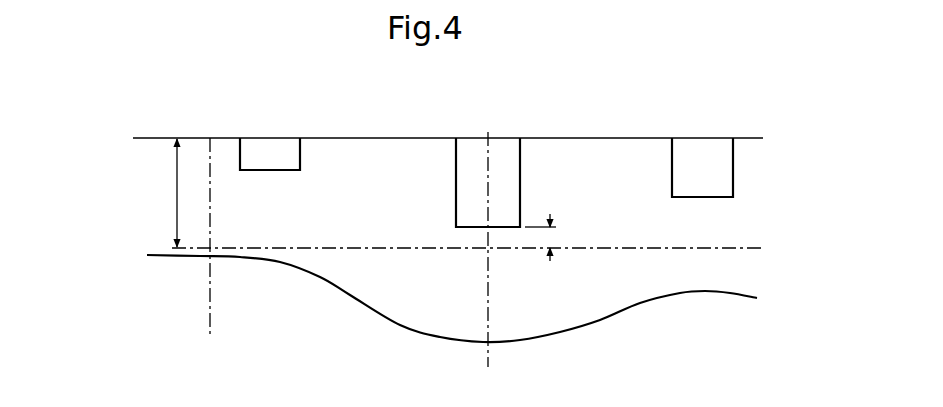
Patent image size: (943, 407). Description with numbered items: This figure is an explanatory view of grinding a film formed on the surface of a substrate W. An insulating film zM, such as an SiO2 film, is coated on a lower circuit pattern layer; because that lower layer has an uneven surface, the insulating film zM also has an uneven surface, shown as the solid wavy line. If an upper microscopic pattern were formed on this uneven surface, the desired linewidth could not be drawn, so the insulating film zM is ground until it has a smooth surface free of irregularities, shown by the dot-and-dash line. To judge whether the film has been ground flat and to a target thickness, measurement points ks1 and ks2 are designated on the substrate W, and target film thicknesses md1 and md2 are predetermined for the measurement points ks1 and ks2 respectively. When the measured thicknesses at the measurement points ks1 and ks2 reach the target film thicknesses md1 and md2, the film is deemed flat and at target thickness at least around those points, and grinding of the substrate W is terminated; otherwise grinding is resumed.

The substrate W is at (741, 187).
The target film thickness md2 is at (136, 193).
The target film thickness md1 is at (555, 244).
The measurement point ks2 is at (224, 256).
The measurement point ks1 is at (520, 258).
The insulating film zM is at (655, 250).